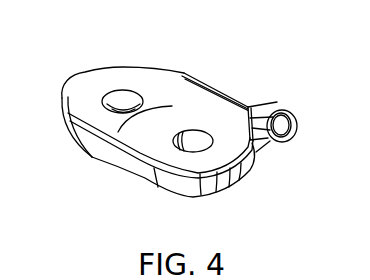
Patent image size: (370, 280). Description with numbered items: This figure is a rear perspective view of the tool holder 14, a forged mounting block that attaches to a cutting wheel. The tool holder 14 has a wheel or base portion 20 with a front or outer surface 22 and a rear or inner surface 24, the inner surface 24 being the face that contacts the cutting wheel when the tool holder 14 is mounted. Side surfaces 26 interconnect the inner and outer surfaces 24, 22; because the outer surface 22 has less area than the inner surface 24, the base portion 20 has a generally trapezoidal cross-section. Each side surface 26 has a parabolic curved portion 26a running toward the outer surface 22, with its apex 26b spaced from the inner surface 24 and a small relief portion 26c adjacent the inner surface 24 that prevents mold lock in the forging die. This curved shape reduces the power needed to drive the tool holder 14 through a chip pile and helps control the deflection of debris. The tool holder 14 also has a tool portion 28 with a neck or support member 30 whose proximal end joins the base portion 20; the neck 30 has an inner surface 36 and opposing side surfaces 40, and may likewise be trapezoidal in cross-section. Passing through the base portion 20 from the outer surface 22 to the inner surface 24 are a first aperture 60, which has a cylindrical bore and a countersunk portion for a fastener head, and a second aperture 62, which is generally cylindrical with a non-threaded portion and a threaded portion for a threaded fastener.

The tool holder 14 is at (89, 159).
The wheel or base portion 20 is at (146, 174).
The front or outer surface 22 is at (195, 203).
The rear or inner surface 24 is at (162, 86).
The side surface 26 is at (235, 173).
The curved portion 26a is at (120, 172).
The apex 26b is at (62, 98).
The relief portion 26c is at (162, 112).
The tool portion 28 is at (226, 86).
The neck or support member 30 is at (270, 109).
The inner surface 36 is at (268, 113).
The side surfaces 40 is at (270, 142).
The first aperture 60 is at (192, 148).
The second aperture 62 is at (118, 100).